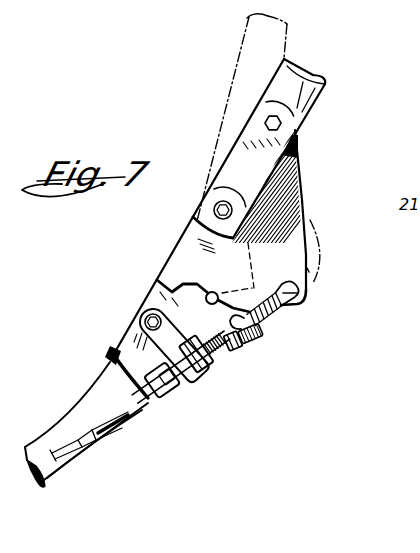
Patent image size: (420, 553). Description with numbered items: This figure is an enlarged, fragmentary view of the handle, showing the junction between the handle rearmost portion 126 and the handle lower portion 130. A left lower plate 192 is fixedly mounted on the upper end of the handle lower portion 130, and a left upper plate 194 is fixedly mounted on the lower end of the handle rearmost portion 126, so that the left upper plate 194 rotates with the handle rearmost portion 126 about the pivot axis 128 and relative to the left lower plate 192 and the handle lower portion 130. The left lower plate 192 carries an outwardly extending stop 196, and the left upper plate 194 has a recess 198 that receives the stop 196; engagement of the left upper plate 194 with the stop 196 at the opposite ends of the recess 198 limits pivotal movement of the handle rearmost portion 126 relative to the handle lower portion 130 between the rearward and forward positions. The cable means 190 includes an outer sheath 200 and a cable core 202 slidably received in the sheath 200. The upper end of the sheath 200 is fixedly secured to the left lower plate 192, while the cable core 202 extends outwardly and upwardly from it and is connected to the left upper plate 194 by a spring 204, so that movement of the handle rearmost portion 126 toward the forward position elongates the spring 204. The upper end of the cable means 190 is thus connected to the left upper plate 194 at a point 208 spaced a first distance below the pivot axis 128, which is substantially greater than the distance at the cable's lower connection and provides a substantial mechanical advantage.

The handle rearmost portion 126 is at (300, 72).
The pivot axis 128 is at (214, 210).
The handle lower portion 130 is at (103, 382).
The cable means 190 is at (137, 408).
The left lower plate 192 is at (123, 339).
The left upper plate 194 is at (322, 200).
The stop 196 is at (220, 278).
The recess 198 is at (172, 280).
The outer sheath 200 is at (105, 434).
The cable core 202 is at (227, 345).
The spring 204 is at (270, 319).
The point 208 is at (306, 293).